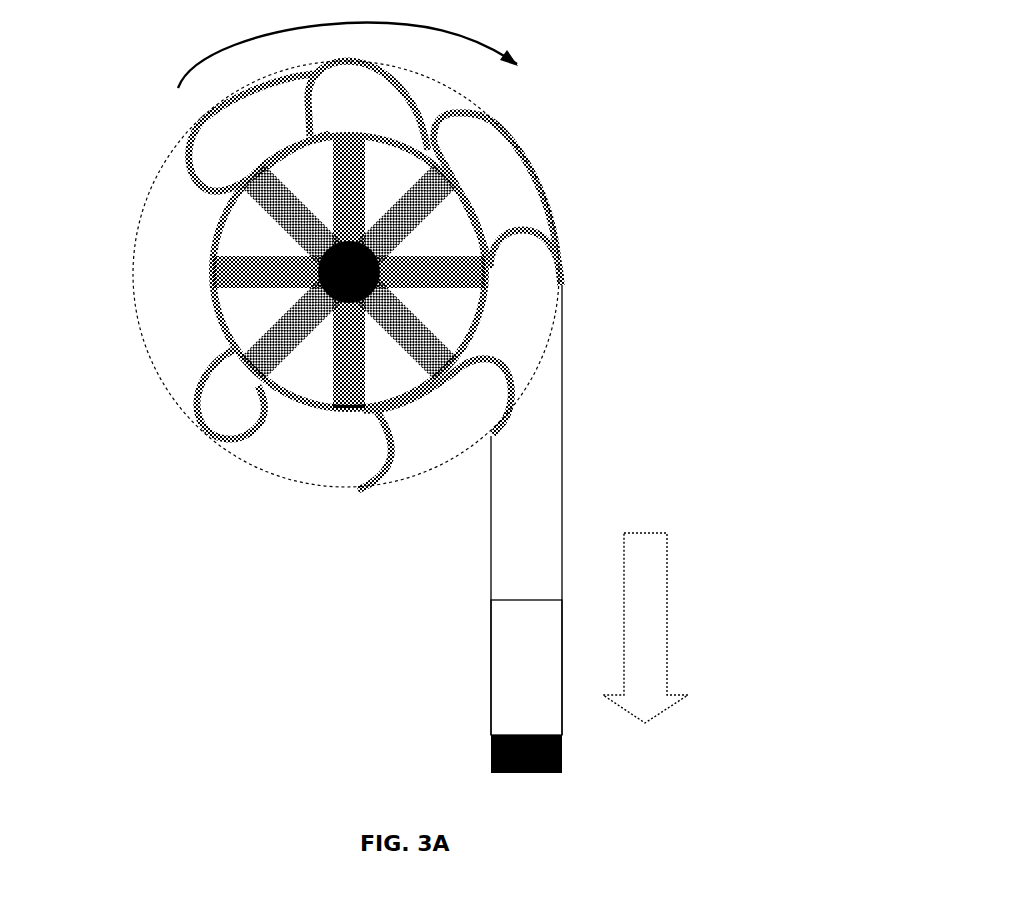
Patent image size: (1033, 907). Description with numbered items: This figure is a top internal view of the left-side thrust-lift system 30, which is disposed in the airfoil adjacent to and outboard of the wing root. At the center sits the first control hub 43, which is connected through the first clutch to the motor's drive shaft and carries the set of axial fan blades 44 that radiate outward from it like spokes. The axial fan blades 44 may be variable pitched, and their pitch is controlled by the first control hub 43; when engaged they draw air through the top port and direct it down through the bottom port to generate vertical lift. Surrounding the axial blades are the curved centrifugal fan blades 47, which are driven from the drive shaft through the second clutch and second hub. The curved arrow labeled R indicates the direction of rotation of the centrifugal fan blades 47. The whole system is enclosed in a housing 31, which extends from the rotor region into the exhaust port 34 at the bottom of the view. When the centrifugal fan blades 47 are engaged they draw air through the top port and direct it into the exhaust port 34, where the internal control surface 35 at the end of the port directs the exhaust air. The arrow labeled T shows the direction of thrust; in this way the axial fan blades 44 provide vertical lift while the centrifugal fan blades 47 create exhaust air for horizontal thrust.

The thrust-lift system 30 is at (551, 98).
The housing 31 is at (560, 238).
The exhaust port 34 is at (527, 718).
The internal control surface 35 is at (560, 756).
The first control hub 43 is at (380, 258).
The axial fan blades 44 is at (248, 376).
The centrifugal fan blades 47 is at (386, 460).
The direction of rotation R is at (341, 72).
The direction of thrust T is at (645, 628).